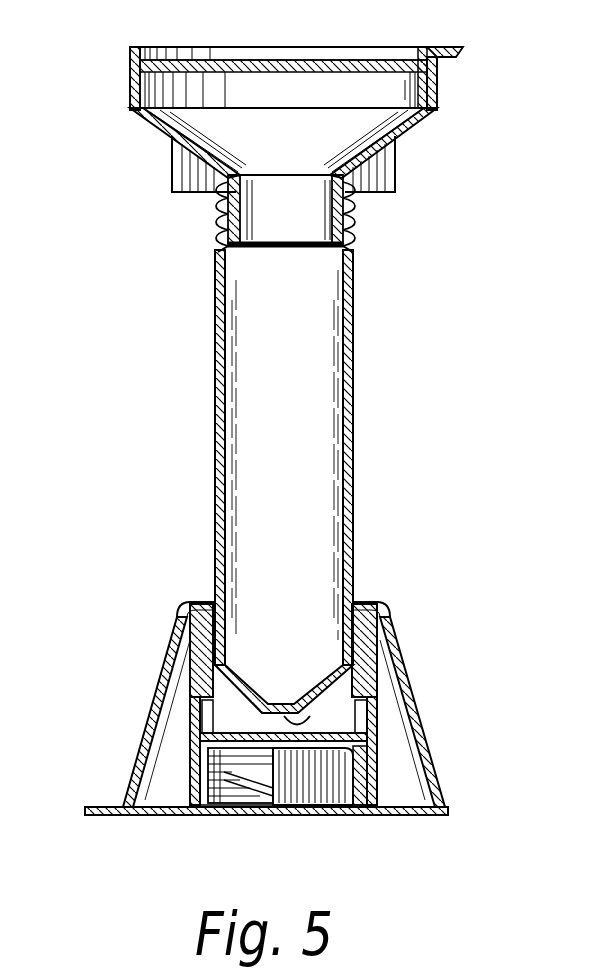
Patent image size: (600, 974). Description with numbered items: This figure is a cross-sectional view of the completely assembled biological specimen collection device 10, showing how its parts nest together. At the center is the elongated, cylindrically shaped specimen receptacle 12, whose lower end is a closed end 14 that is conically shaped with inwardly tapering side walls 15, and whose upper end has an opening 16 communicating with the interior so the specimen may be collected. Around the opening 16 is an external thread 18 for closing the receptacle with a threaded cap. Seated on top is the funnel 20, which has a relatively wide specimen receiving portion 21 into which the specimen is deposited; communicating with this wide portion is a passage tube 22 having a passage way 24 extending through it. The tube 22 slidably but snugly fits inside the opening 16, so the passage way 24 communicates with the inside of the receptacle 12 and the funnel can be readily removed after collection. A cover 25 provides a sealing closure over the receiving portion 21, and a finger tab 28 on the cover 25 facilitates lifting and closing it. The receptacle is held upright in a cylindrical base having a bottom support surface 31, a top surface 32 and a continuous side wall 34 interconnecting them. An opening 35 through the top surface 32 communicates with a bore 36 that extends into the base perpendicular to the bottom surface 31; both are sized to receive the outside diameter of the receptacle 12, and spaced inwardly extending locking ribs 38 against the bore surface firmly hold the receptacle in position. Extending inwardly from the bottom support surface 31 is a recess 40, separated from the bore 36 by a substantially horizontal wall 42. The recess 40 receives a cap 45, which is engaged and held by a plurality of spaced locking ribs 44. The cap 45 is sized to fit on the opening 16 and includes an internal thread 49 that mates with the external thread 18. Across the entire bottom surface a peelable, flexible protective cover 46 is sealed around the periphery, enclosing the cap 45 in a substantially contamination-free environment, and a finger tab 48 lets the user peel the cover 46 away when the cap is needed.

The biological specimen collection device 10 is at (400, 497).
The specimen receptacle 12 is at (353, 428).
The closed end 14 is at (312, 719).
The inwardly tapering side walls 15 is at (217, 697).
The opening 16 is at (370, 188).
The external thread 18 is at (355, 214).
The funnel 20 is at (150, 127).
The specimen receiving portion 21 is at (140, 77).
The passage tube 22 is at (227, 222).
The passage way 24 is at (265, 213).
The cover 25 is at (330, 46).
The finger tab 28 is at (453, 49).
The bottom support surface 31 is at (130, 808).
The top surface 32 is at (385, 605).
The side walls 34 is at (165, 645).
The opening 35 is at (205, 600).
The bore 36 is at (352, 722).
The locking ribs 38 is at (362, 678).
The recess 40 is at (356, 803).
The horizontal wall 42 is at (256, 724).
The locking ribs 44 is at (205, 781).
The cap 45 is at (300, 797).
The protective cover 46 is at (180, 815).
The finger tab 48 is at (90, 812).
The internal thread 49 is at (260, 797).